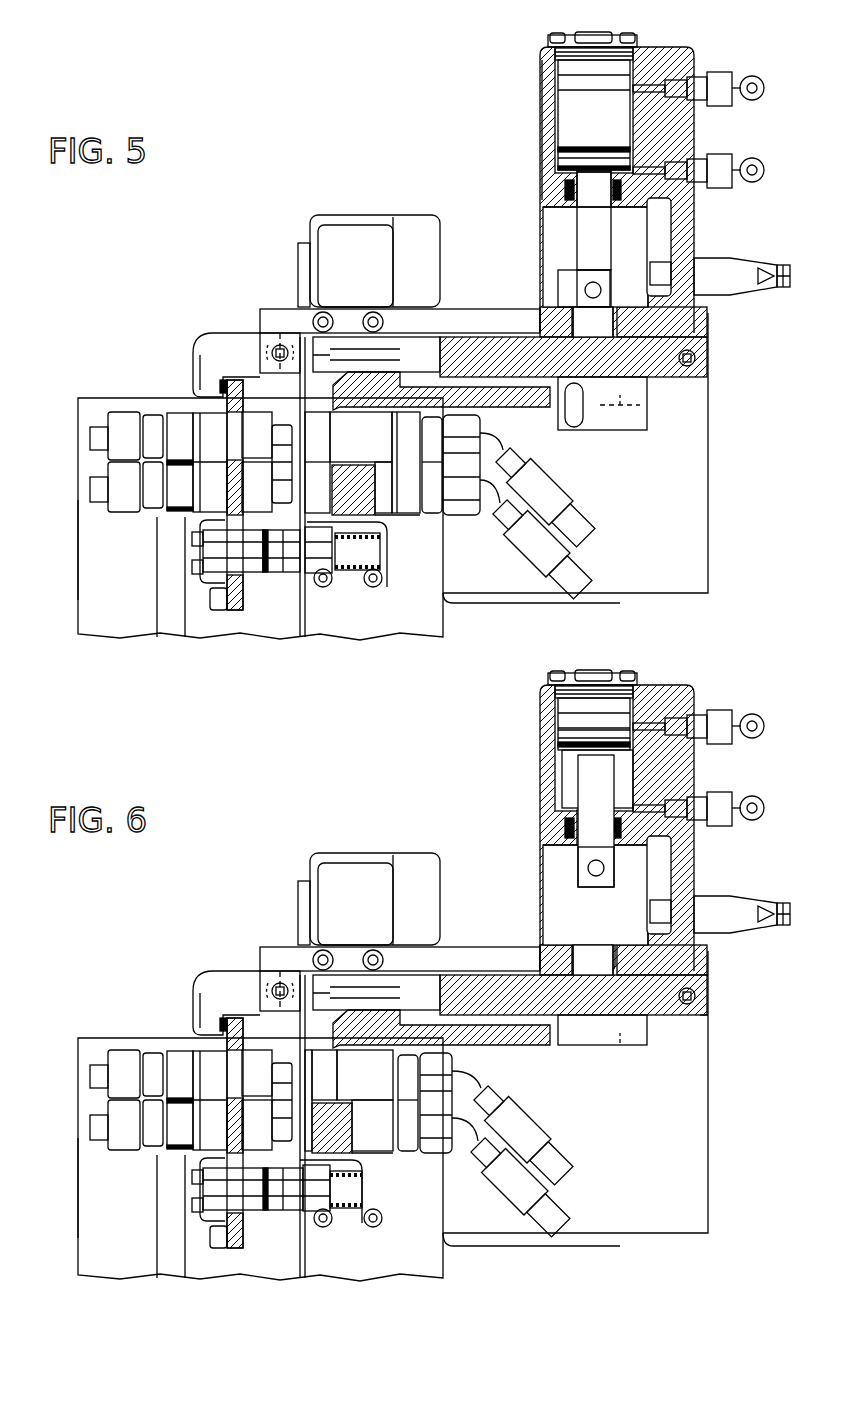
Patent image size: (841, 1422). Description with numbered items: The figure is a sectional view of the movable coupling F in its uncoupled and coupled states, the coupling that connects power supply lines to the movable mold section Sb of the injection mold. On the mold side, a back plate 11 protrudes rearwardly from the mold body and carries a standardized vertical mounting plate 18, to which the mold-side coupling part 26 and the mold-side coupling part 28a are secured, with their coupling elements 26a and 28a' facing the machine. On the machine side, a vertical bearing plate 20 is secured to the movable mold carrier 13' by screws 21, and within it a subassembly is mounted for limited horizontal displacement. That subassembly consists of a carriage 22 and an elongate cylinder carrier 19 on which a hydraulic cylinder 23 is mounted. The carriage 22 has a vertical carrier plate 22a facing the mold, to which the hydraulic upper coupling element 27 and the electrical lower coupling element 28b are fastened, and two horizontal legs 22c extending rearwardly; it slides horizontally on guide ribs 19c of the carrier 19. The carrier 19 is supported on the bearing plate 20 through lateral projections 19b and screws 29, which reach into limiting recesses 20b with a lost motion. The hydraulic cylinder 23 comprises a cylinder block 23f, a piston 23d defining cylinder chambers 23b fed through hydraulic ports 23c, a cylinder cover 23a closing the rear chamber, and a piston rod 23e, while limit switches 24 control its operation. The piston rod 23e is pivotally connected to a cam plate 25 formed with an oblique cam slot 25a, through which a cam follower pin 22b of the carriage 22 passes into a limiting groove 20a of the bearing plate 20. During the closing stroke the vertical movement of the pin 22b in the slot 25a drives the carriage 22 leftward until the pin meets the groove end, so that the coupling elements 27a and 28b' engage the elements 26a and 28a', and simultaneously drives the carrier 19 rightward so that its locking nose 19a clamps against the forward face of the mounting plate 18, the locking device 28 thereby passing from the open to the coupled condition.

In FIG. 5, the back plate 11 is at (282, 622).
In FIG. 6, the back plate 11 is at (242, 1149).
In FIG. 5, the movable mold carrier 13' is at (459, 436).
In FIG. 6, the movable mold carrier 13' is at (459, 1076).
In FIG. 5, the mounting plate 18 is at (220, 385).
In FIG. 6, the mounting plate 18 is at (191, 1011).
In FIG. 5, the cylinder carrier 19 is at (225, 331).
In FIG. 6, the cylinder carrier 19 is at (246, 962).
In FIG. 5, the locking nose 19a is at (205, 345).
In FIG. 6, the locking nose 19a is at (185, 968).
In FIG. 6, the lateral projections 19b is at (744, 1045).
In FIG. 5, the guide ribs 19c is at (345, 355).
In FIG. 6, the guide ribs 19c is at (380, 992).
In FIG. 5, the bearing plate 20 is at (514, 334).
In FIG. 6, the bearing plate 20 is at (484, 1088).
In FIG. 5, the limiting groove 20a is at (650, 440).
In FIG. 6, the limiting groove 20a is at (665, 1078).
In FIG. 5, the limiting recesses 20b is at (291, 300).
In FIG. 6, the limiting recesses 20b is at (262, 957).
In FIG. 5, the screws 21 is at (385, 322).
In FIG. 6, the screws 21 is at (376, 1116).
In FIG. 5, the carriage 22 is at (465, 333).
In FIG. 6, the carriage 22 is at (573, 943).
In FIG. 5, the carrier plate 22a is at (385, 480).
In FIG. 6, the carrier plate 22a is at (396, 1190).
In FIG. 5, the cam follower pin 22b is at (648, 390).
In FIG. 6, the cam follower pin 22b is at (602, 1056).
In FIG. 5, the horizontal legs 22c is at (495, 405).
In FIG. 6, the horizontal legs 22c is at (460, 1060).
In FIG. 5, the hydraulic cylinder 23 is at (538, 135).
In FIG. 6, the hydraulic cylinder 23 is at (584, 830).
In FIG. 5, the cylinder cover 23a is at (555, 46).
In FIG. 6, the cylinder cover 23a is at (603, 656).
In FIG. 5, the cylinder chambers 23b is at (612, 126).
In FIG. 6, the cylinder chambers 23b is at (561, 749).
In FIG. 5, the hydraulic ports 23c is at (720, 78).
In FIG. 6, the hydraulic ports 23c is at (710, 738).
In FIG. 5, the piston 23d is at (553, 175).
In FIG. 6, the piston 23d is at (556, 776).
In FIG. 5, the piston rod 23e is at (585, 250).
In FIG. 6, the piston rod 23e is at (552, 821).
In FIG. 5, the cylinder block 23f is at (540, 100).
In FIG. 5, the limit switches 24 is at (740, 287).
In FIG. 6, the limit switches 24 is at (720, 938).
In FIG. 5, the cam plate 25 is at (565, 292).
In FIG. 6, the cam plate 25 is at (552, 884).
In FIG. 5, the cam slot 25a is at (580, 400).
In FIG. 6, the cam slot 25a is at (654, 992).
In FIG. 5, the mold-side coupling part 26 is at (157, 490).
In FIG. 6, the mold-side coupling part 26 is at (191, 1131).
In FIG. 5, the coupling elements 26a is at (283, 440).
In FIG. 5, the hydraulic upper coupling element 27 is at (377, 447).
In FIG. 6, the hydraulic upper coupling element 27 is at (440, 1145).
In FIG. 5, the coupling elements 27a is at (320, 440).
In FIG. 6, the coupling elements 27a is at (226, 1133).
In FIG. 6, the locking device 28 is at (323, 1246).
In FIG. 5, the mold-side coupling part 28a is at (219, 596).
In FIG. 6, the mold-side coupling part 28a is at (198, 1212).
In FIG. 5, the coupling elements 28a' is at (272, 614).
In FIG. 5, the electrical lower coupling element 28b is at (363, 603).
In FIG. 6, the electrical lower coupling element 28b is at (353, 1244).
In FIG. 5, the coupling elements 28b' is at (342, 625).
In FIG. 5, the screws 29 is at (275, 325).
In FIG. 6, the screws 29 is at (526, 950).
In FIG. 5, the movable coupling F is at (112, 523).
In FIG. 6, the movable coupling F is at (73, 1188).
In FIG. 5, the movable mold section Sb is at (132, 394).
In FIG. 6, the movable mold section Sb is at (260, 1117).